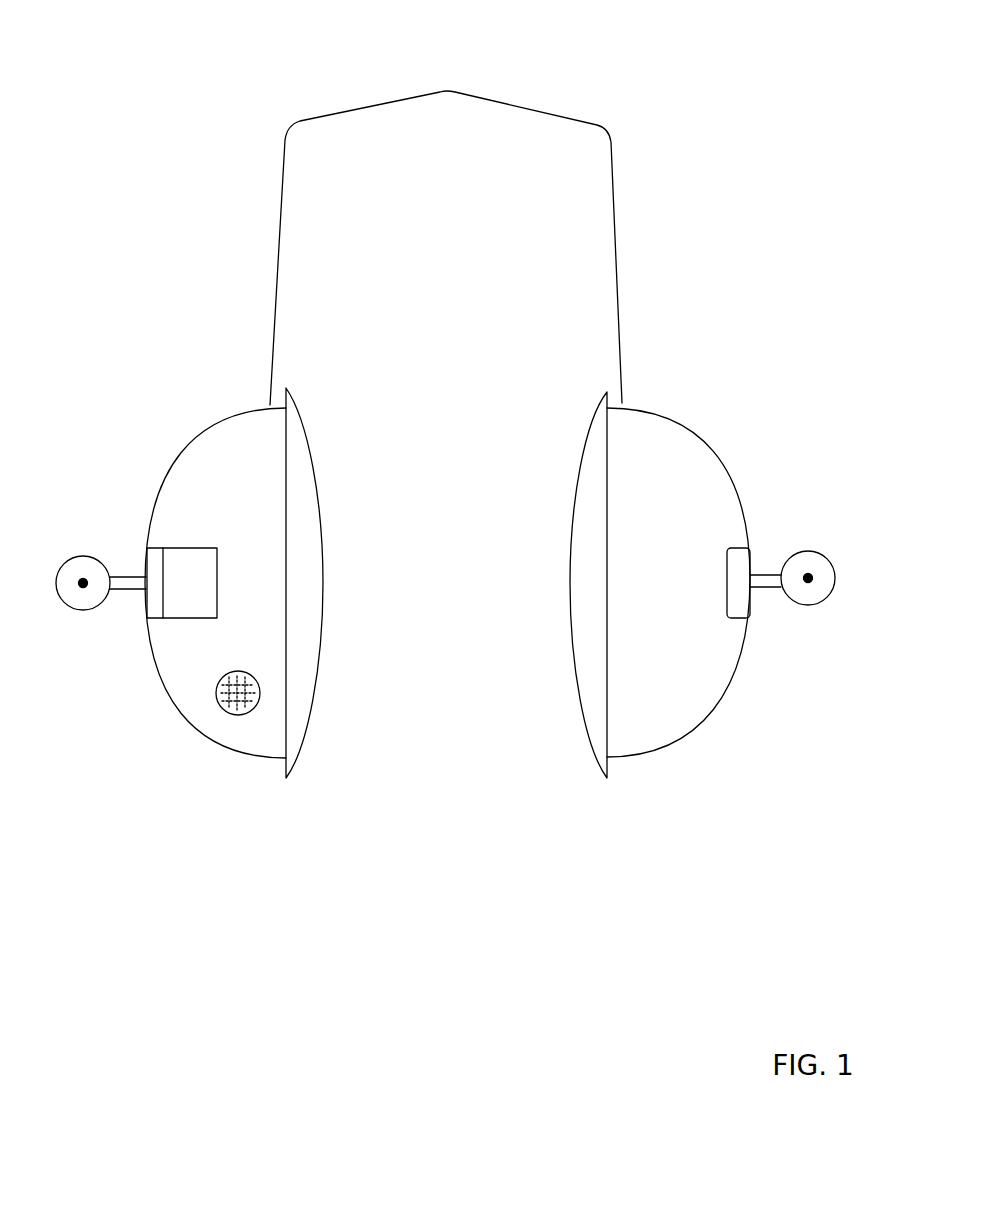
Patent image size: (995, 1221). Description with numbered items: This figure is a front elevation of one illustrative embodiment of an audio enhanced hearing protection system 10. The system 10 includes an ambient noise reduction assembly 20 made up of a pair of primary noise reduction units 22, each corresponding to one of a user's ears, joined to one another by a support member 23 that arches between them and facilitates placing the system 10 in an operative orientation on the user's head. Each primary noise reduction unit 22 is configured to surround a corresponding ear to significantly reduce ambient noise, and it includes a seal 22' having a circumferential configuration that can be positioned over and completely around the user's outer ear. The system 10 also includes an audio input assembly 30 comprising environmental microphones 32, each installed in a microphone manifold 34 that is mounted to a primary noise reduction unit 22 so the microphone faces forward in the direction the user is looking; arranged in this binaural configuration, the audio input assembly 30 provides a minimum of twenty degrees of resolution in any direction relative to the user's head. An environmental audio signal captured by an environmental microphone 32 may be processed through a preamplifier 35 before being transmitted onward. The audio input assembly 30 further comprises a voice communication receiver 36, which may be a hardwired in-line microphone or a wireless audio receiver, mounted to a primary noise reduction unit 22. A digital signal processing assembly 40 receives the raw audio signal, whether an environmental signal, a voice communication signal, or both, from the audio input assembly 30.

The audio enhanced hearing protection system 10 is at (755, 138).
The ambient noise reduction assembly 20 is at (659, 781).
The primary noise reduction unit 22 is at (706, 541).
The seal 22' is at (517, 585).
The support member 23 is at (375, 107).
The audio input assembly 30 is at (160, 746).
The environmental microphone 32 is at (808, 578).
The microphone manifold 34 is at (817, 605).
The preamplifier 35 is at (740, 556).
The voice communication receiver 36 is at (237, 715).
The digital signal processing assembly 40 is at (196, 526).